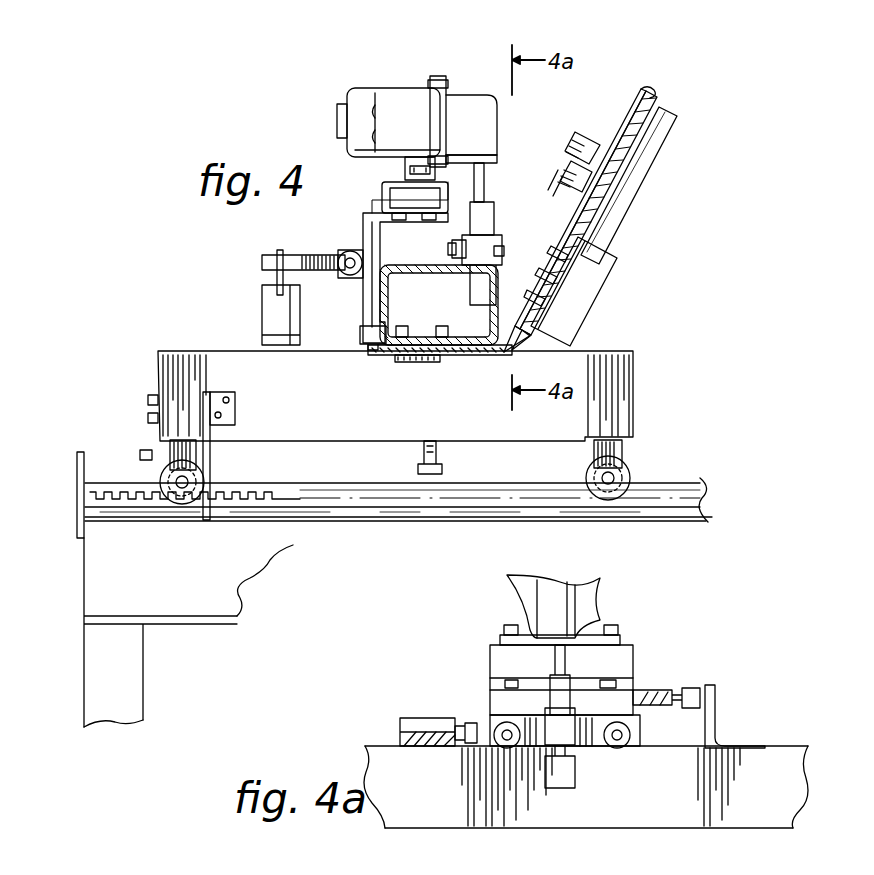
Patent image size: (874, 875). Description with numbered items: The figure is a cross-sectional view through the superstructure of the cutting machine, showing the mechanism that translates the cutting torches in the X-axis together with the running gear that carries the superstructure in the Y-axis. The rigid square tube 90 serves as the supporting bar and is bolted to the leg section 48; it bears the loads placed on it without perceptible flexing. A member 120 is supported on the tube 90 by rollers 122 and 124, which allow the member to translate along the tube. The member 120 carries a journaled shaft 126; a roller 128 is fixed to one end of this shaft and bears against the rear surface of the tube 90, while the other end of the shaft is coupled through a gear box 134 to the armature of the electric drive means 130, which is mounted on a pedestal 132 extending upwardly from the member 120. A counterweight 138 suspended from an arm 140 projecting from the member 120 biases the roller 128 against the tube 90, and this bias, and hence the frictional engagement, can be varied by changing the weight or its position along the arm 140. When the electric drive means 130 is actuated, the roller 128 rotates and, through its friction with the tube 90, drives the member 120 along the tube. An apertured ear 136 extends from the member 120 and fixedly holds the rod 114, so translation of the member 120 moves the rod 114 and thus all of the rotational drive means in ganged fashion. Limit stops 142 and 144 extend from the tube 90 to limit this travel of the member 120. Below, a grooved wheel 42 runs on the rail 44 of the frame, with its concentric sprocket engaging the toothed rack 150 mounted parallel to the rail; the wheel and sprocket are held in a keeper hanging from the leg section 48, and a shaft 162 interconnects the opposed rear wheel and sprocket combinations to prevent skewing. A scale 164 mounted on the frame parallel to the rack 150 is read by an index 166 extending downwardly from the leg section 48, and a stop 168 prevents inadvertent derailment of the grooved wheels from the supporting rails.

In FIG. 4, the grooved wheel 42 is at (150, 478).
In FIG. 4, the rail 44 is at (104, 483).
In FIG. 4, the leg section 48 is at (614, 351).
In FIG. 4, the square tube 90 is at (483, 355).
In FIG. 4A, the square tube 90 is at (790, 746).
In FIG. 4, the rod 114 is at (340, 250).
In FIG. 4, the member 120 is at (383, 257).
In FIG. 4A, the member 120 is at (490, 720).
In FIG. 4, the roller 122 is at (458, 246).
In FIG. 4, the roller 124 is at (360, 330).
In FIG. 4, the journaled shaft 126 is at (490, 266).
In FIG. 4, the roller 128 is at (466, 302).
In FIG. 4, the electric drive means 130 is at (396, 94).
In FIG. 4, the pedestal 132 is at (368, 212).
In FIG. 4, the gear box 134 is at (468, 103).
In FIG. 4, the apertured ear 136 is at (344, 254).
In FIG. 4, the counterweight 138 is at (262, 302).
In FIG. 4, the arm 140 is at (262, 262).
In FIG. 4A, the limit stop 142 is at (412, 718).
In FIG. 4A, the limit stop 144 is at (715, 704).
In FIG. 4, the toothed rack 150 is at (386, 480).
In FIG. 4, the shaft 162 is at (178, 490).
In FIG. 4, the scale 164 is at (215, 520).
In FIG. 4, the index 166 is at (208, 450).
In FIG. 4, the stop 168 is at (80, 455).